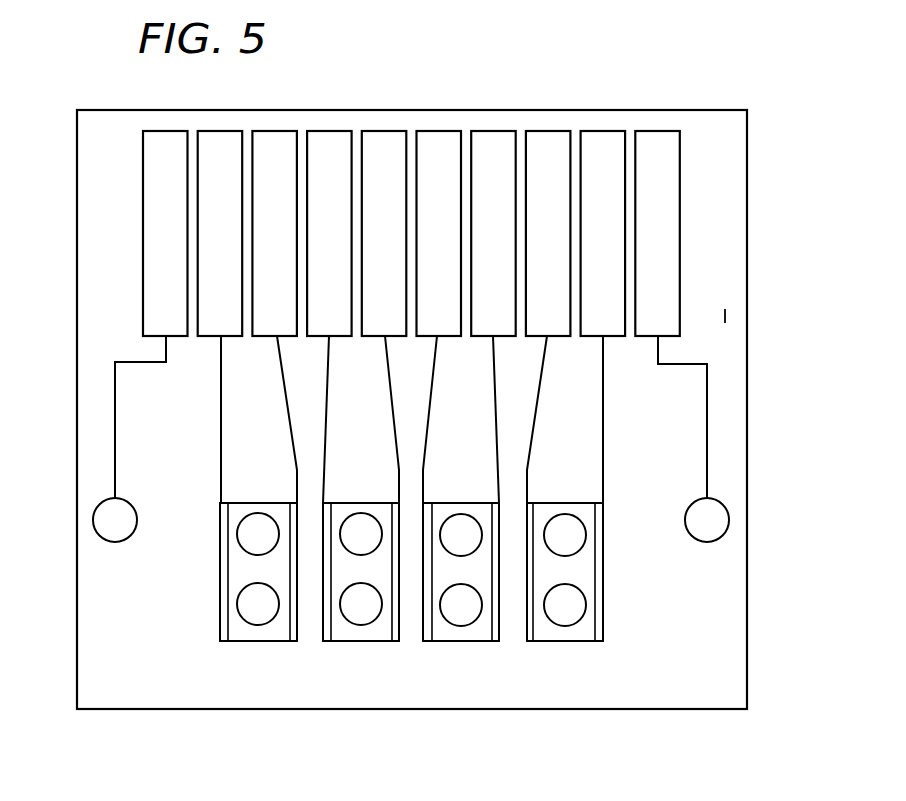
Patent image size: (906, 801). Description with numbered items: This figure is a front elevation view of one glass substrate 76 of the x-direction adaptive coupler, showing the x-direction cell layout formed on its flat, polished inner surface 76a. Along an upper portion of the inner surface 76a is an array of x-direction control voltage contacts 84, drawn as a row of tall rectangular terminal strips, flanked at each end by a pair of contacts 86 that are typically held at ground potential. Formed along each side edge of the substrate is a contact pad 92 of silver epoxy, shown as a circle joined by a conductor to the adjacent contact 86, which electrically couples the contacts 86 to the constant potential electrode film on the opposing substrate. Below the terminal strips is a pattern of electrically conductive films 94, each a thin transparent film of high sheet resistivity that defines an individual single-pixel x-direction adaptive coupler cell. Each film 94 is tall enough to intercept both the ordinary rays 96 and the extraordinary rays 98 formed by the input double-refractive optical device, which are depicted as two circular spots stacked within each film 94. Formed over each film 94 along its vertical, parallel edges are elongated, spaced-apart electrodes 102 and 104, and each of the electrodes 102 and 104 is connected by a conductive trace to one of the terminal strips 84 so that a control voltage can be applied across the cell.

The glass substrate 76 is at (747, 425).
The inner surface 76a is at (725, 316).
The x-direction control voltage contacts 84 is at (387, 131).
The contacts 86 is at (143, 206).
The contact pad 92 is at (93, 519).
The electrically conductive films 94 is at (370, 641).
The ordinary rays 96 is at (270, 513).
The extraordinary rays 98 is at (250, 625).
The electrode 102 is at (220, 605).
The electrode 104 is at (298, 607).